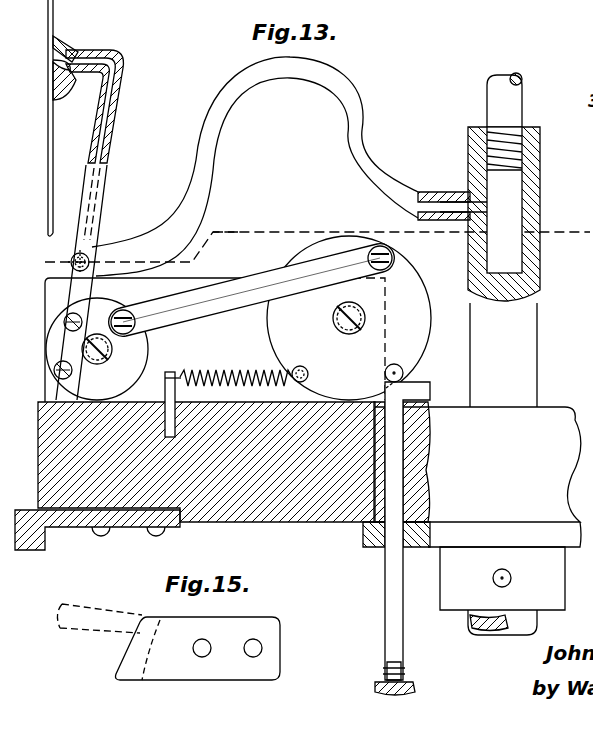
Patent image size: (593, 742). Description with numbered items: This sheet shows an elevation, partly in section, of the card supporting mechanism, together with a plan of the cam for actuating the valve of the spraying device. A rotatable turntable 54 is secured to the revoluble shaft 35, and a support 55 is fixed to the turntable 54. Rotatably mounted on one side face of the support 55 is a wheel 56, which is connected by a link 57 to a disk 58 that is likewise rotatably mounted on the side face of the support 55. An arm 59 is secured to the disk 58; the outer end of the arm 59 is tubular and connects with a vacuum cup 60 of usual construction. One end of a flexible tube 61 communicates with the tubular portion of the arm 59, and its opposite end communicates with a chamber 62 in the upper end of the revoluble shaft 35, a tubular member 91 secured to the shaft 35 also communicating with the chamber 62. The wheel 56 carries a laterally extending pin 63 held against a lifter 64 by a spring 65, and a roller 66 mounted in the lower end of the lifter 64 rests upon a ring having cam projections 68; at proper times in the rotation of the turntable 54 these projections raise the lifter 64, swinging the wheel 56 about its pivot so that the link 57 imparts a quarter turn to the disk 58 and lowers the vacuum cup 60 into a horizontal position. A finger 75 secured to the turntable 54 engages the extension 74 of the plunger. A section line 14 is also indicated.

In FIG. 13, the section line / pivot axis 14 is at (304, 248).
In FIG. 13, the revoluble shaft 35 is at (530, 343).
In FIG. 13, the turntable 54 is at (548, 405).
In FIG. 13, the support 55 is at (212, 230).
In FIG. 13, the wheel 56 is at (410, 283).
In FIG. 13, the link 57 is at (236, 292).
In FIG. 13, the disk 58 is at (138, 353).
In FIG. 13, the arm 59 is at (123, 92).
In FIG. 13, the vacuum cup 60 is at (74, 42).
In FIG. 13, the flexible tube 61 is at (360, 108).
In FIG. 13, the chamber 62 is at (510, 258).
In FIG. 13, the pin 63 is at (404, 372).
In FIG. 13, the lifter 64 is at (385, 586).
In FIG. 13, the spring 65 is at (220, 368).
In FIG. 13, the roller 66 is at (384, 660).
In FIG. 13, the cam projections 68 is at (415, 692).
In FIG. 15, the extension 74 is at (84, 604).
In FIG. 13, the finger 75 is at (30, 550).
In FIG. 15, the finger 75 is at (240, 624).
In FIG. 13, the tubular member 91 is at (522, 100).